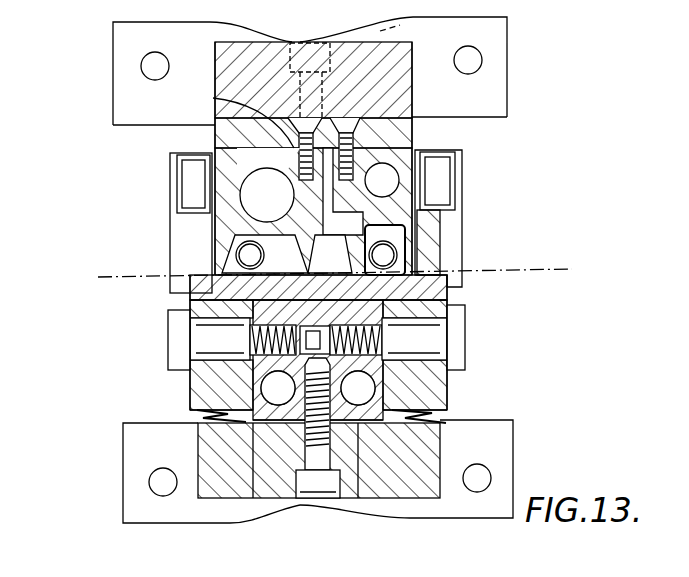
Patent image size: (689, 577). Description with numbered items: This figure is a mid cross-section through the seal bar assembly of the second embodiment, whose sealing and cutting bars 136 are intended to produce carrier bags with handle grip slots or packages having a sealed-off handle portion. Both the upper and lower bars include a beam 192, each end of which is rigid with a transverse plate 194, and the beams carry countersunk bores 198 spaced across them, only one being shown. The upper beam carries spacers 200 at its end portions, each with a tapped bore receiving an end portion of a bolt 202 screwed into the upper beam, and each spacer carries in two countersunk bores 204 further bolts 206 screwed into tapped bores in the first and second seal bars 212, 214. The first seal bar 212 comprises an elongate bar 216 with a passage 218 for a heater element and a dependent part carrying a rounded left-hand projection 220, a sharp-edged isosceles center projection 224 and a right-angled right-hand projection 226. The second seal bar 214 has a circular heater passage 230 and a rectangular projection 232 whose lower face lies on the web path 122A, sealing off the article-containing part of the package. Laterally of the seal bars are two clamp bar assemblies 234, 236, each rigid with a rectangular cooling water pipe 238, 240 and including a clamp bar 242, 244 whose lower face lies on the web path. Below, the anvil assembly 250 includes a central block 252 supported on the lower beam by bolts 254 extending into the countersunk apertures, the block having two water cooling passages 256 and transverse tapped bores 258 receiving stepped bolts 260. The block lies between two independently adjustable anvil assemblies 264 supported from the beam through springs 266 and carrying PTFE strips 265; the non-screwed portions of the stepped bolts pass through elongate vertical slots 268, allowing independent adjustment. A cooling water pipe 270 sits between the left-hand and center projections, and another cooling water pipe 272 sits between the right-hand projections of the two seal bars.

The web path 122A is at (152, 286).
The sealing and cutting bars 136 is at (462, 247).
The beam 192 is at (226, 62).
The plate 194 is at (495, 45).
The countersunk bore 198 is at (312, 462).
The spacer 200 is at (400, 118).
The bolt 202 is at (393, 40).
The countersunk bore 204 is at (215, 99).
The bolt 206 is at (362, 164).
The first seal bar 212 is at (208, 224).
The second seal bar 214 is at (445, 216).
The elongate bar 216 is at (212, 180).
The passage 218 is at (215, 195).
The left-hand projection 220 is at (190, 320).
The center projection 224 is at (300, 240).
The right-hand projection 226 is at (188, 339).
The passage 230 is at (445, 190).
The projection 232 is at (420, 256).
The clamp bar assembly 234 is at (140, 274).
The clamp bar assembly 236 is at (445, 230).
The pipe 238 is at (176, 160).
The pipe 240 is at (462, 160).
The clamp bar 242 is at (218, 210).
The clamp bar 244 is at (428, 272).
The anvil assembly 250 is at (205, 400).
The central block 252 is at (410, 470).
The bolt 254 is at (322, 498).
The water cooling passage 256 is at (278, 395).
The tapped bore 258 is at (205, 420).
The stepped bolt 260 is at (185, 363).
The adjustable anvil assembly 264 is at (433, 386).
The PTFE strip 265 is at (455, 298).
The spring 266 is at (428, 412).
The vertical slot 268 is at (432, 377).
The pipe 270 is at (200, 240).
The pipe 272 is at (448, 327).